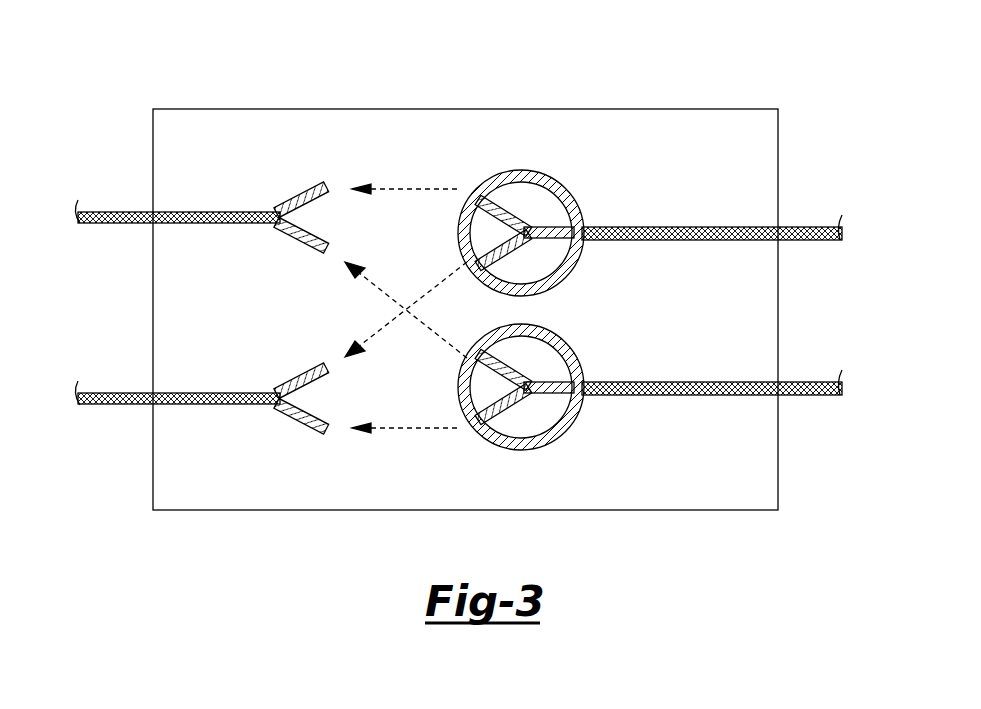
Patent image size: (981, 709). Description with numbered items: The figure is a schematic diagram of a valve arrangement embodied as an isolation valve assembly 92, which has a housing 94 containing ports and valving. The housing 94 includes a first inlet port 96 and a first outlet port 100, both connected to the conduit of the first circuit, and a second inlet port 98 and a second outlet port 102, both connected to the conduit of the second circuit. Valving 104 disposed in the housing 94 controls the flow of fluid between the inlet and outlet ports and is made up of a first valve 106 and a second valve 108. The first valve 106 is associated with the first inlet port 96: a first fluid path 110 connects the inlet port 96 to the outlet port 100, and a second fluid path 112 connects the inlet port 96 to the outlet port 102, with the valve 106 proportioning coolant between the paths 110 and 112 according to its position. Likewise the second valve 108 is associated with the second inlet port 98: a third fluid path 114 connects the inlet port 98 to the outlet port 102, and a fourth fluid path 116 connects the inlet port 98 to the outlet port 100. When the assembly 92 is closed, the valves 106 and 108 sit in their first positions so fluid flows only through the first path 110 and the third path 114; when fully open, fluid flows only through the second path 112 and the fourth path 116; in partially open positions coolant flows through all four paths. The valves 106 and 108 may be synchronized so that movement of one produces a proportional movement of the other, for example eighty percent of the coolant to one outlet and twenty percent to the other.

The isolation valve assembly 92 is at (462, 296).
The housing 94 is at (778, 128).
The first inlet port 96 is at (778, 227).
The second inlet port 98 is at (778, 395).
The first outlet port 100 is at (150, 212).
The second outlet port 102 is at (150, 405).
The valving 104 is at (618, 168).
The first valve 106 is at (522, 170).
The second valve 108 is at (522, 452).
The first fluid path 110 is at (412, 188).
The second fluid path 112 is at (372, 330).
The third fluid path 114 is at (413, 430).
The fourth fluid path 116 is at (443, 340).